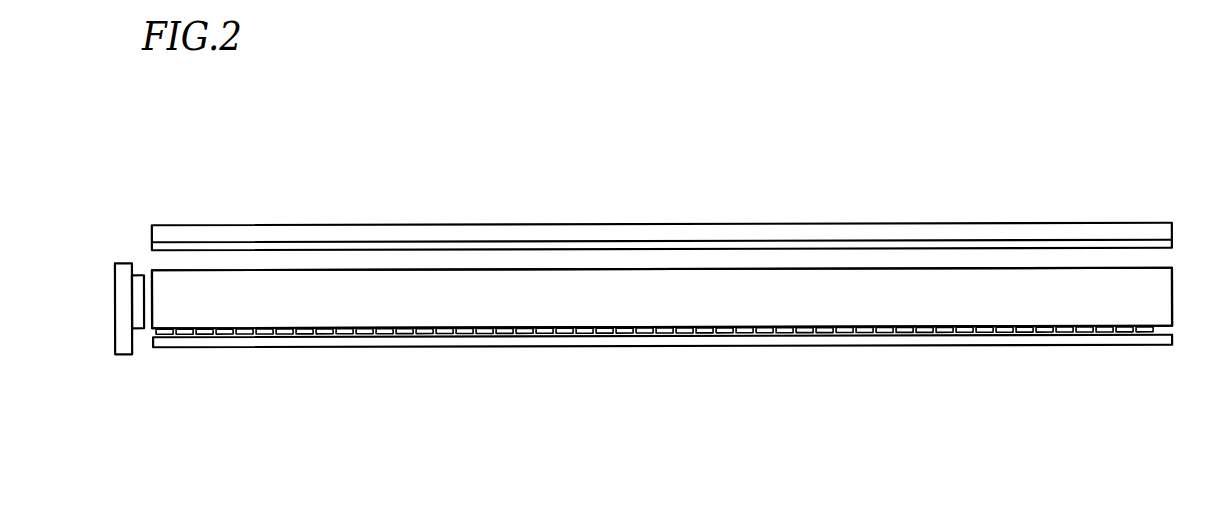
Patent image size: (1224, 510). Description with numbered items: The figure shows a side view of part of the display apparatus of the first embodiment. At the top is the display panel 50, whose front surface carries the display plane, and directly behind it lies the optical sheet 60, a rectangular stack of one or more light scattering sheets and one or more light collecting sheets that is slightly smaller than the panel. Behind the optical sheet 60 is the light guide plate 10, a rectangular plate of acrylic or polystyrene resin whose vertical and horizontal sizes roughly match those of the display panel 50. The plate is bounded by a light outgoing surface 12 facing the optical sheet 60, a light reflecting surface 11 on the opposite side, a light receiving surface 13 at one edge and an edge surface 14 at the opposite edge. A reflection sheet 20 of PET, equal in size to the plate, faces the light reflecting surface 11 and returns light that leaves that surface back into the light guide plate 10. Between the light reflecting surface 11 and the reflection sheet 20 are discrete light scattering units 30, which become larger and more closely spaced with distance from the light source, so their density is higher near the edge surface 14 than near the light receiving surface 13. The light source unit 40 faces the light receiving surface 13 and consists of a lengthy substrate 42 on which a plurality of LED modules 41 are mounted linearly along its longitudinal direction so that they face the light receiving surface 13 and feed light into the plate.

The light guide plate 10 is at (965, 310).
The light reflecting surface 11 is at (540, 332).
The light outgoing surface 12 is at (485, 268).
The light receiving surface 13 is at (147, 318).
The edge surface 14 is at (1172, 297).
The reflection sheet 20 is at (341, 341).
The light scattering units 30 is at (203, 334).
The light source unit 40 is at (95, 362).
The LED modules 41 is at (137, 327).
The substrate 42 is at (115, 312).
The display panel 50 is at (307, 231).
The optical sheet 60 is at (392, 247).